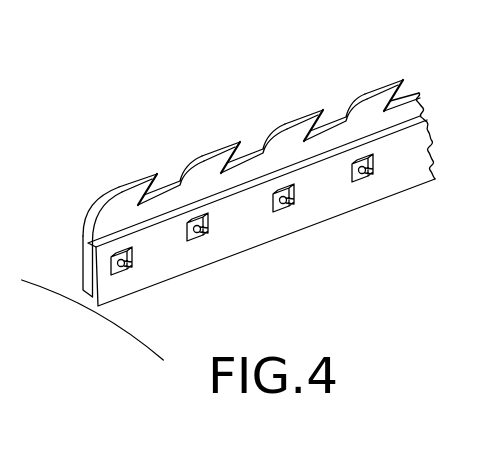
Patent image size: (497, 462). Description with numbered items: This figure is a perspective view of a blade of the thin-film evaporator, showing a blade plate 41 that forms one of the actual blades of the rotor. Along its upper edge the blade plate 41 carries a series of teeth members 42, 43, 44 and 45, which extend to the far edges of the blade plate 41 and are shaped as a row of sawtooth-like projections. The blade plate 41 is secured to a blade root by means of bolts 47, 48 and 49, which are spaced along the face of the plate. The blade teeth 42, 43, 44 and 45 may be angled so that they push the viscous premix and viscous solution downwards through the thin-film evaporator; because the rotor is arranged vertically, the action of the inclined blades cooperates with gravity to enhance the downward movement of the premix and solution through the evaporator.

The blade plate 41 is at (90, 213).
The tooth member 42 is at (135, 184).
The tooth member 43 is at (217, 150).
The tooth member 44 is at (299, 119).
The tooth member 45 is at (381, 87).
The bolt 47 is at (132, 264).
The bolt 48 is at (208, 231).
The bolt 49 is at (294, 202).